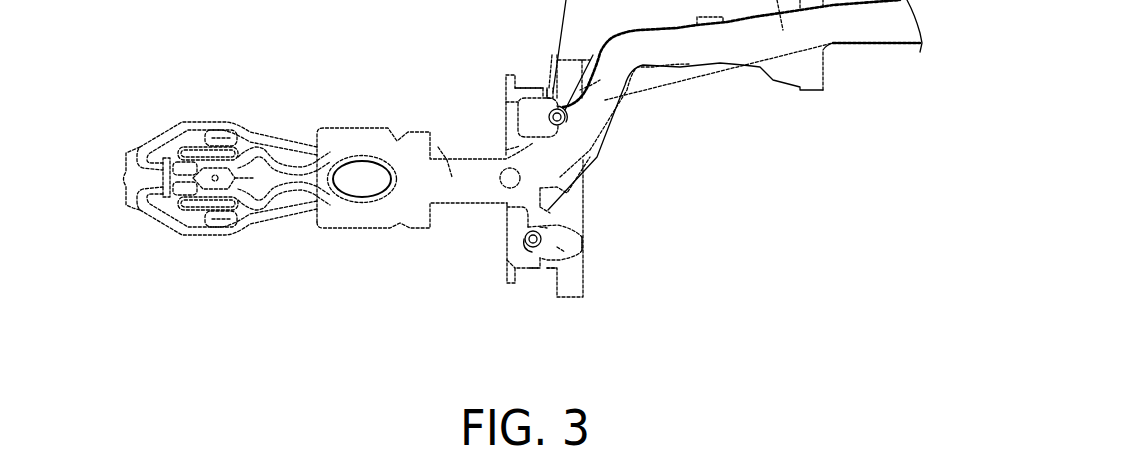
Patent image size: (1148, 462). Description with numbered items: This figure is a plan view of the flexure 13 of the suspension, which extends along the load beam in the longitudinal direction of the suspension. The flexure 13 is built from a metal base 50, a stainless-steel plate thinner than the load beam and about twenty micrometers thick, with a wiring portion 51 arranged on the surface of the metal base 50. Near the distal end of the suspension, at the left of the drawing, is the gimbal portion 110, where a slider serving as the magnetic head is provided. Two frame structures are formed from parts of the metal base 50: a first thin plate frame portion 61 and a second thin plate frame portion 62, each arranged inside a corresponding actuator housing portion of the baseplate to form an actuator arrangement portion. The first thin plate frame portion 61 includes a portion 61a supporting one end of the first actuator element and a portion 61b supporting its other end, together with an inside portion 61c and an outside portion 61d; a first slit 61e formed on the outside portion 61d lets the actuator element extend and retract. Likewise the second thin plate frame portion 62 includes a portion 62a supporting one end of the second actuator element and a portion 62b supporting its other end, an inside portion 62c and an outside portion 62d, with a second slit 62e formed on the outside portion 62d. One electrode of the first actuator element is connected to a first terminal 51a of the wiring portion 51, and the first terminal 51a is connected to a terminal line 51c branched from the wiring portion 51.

The flexure 13 is at (332, 121).
The metal base 50 is at (577, 180).
The wiring portion 51 is at (438, 147).
The first terminal 51a is at (557, 247).
The terminal line 51c is at (542, 228).
The first thin plate frame portion 61 is at (507, 228).
The portion supporting one end of the first actuator element 61a is at (580, 240).
The portion supporting the other end of the first actuator element 61b is at (507, 260).
The inside portion 61c is at (550, 212).
The outside portion 61d is at (533, 267).
The first slit 61e is at (543, 272).
The second thin plate frame portion 62 is at (505, 120).
The portion supporting one end of the second actuator element 62a is at (580, 90).
The portion supporting the other end of the second actuator element 62b is at (518, 102).
The inside portion 62c is at (505, 135).
The outside portion 62d is at (530, 88).
The second slit 62e is at (545, 87).
The gimbal portion 110 is at (204, 243).